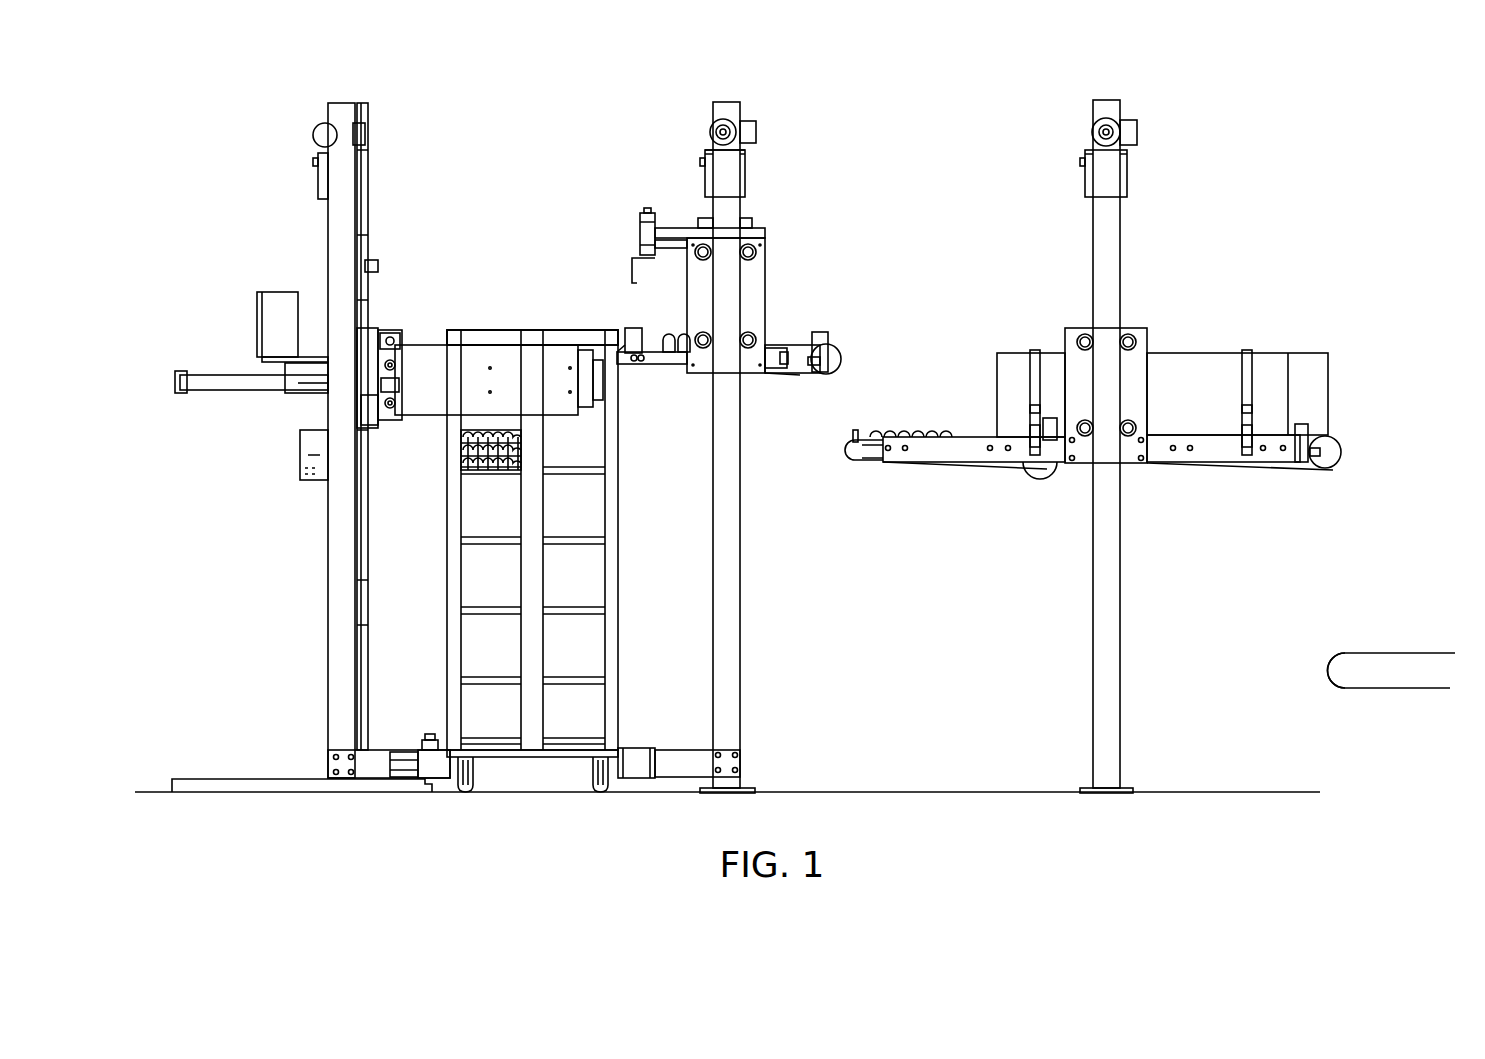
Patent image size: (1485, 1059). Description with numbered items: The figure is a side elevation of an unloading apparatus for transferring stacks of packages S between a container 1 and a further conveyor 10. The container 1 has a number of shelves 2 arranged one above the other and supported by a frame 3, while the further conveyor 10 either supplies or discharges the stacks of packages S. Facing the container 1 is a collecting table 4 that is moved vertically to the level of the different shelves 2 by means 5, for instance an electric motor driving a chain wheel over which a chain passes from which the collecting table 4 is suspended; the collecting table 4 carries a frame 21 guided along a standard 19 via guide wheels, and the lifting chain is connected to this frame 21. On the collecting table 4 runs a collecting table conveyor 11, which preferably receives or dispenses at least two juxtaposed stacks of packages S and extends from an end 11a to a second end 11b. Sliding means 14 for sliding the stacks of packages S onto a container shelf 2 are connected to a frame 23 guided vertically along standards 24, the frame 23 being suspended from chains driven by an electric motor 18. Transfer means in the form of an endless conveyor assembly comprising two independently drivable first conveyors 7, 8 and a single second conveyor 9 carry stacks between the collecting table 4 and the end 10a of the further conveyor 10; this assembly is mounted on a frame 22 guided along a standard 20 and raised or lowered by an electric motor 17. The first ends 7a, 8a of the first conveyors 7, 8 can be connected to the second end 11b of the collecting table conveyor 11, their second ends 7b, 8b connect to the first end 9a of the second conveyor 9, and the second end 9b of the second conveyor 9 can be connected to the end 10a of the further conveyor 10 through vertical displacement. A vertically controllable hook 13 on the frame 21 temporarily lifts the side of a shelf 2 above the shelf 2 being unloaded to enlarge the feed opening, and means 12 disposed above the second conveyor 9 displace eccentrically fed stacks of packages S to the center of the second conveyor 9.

The container 1 is at (530, 338).
The shelves 2 is at (567, 540).
The frame 3 is at (553, 525).
The collecting table 4 is at (790, 383).
The means for moving the collecting table 5 is at (750, 134).
The first conveyor 7 is at (917, 492).
The first conveyor 8 is at (940, 467).
The first end of first conveyor 7a is at (826, 492).
The first end of first conveyor 8a is at (846, 461).
The second end of first conveyor 7b is at (1016, 508).
The second end of first conveyor 8b is at (1043, 469).
The second conveyor 9 is at (1270, 469).
The first end of second conveyor 9a is at (1141, 471).
The second end of second conveyor 9b is at (1333, 470).
The further conveyor 10 is at (1405, 690).
The end of further conveyor 10a is at (1336, 683).
The collecting table conveyor 11 is at (785, 345).
The pusher head 11a is at (622, 345).
The second end of collecting table conveyor 11b is at (834, 355).
The means for displacing eccentrically fed stacks 12 is at (1170, 382).
The hook 13 is at (633, 268).
The sliding means 14 is at (507, 373).
The electric motor 17 is at (1138, 134).
The electric motor 18 is at (323, 131).
The standard 19 is at (723, 111).
The standard 20 is at (1102, 108).
The frame 21 is at (755, 283).
The frame 22 is at (1084, 380).
The frame 23 is at (366, 406).
The standards 24 is at (278, 692).
The stacks of packages S is at (470, 456).